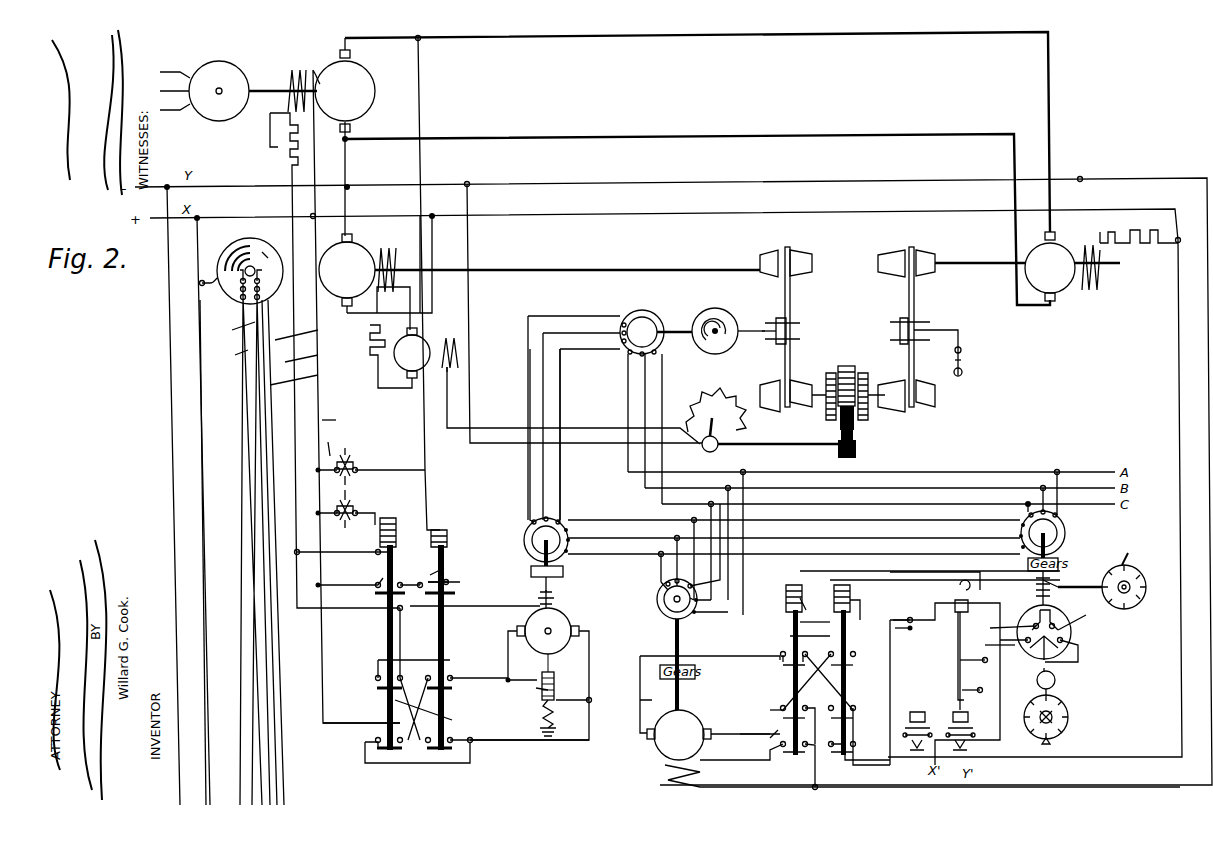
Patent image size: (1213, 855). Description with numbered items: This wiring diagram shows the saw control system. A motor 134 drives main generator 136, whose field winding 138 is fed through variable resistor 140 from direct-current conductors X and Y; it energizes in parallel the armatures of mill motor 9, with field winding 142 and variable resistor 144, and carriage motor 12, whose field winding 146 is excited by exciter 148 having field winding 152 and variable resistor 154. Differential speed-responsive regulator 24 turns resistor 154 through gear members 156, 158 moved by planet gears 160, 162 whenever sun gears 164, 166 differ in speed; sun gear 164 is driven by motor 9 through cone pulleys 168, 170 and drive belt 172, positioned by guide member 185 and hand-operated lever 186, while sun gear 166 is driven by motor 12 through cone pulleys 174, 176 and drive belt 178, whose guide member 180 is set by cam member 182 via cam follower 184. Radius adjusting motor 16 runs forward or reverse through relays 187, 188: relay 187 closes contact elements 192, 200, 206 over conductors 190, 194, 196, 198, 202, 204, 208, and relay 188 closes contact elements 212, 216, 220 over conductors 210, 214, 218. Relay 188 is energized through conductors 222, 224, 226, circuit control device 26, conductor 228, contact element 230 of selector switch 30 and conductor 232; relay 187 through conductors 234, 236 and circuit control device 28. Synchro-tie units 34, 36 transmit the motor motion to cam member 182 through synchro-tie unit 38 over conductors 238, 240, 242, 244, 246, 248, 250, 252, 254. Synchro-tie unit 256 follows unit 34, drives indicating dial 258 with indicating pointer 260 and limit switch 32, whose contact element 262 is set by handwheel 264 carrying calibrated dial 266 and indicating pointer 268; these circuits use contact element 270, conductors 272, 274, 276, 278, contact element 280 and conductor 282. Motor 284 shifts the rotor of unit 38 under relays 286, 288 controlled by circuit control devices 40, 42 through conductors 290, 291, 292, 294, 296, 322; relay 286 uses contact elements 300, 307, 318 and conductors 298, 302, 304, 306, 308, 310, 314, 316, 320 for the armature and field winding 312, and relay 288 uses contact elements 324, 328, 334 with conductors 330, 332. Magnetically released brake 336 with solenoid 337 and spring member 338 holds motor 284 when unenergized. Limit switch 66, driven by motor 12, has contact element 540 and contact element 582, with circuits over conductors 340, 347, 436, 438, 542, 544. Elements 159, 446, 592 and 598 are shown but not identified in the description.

The mill motor 9 is at (1036, 236).
The carriage drive motor 12 is at (356, 248).
The radius adjusting motor 16 is at (694, 724).
The differential speed-responsive regulator 24 is at (852, 305).
The circuit control device 26 is at (918, 712).
The circuit control device 28 is at (958, 712).
The selector switch 30 is at (955, 600).
The limit switch 32 is at (1072, 630).
The synchro-tie unit 34 is at (658, 610).
The synchro-tie unit 36 is at (642, 312).
The synchro-tie unit 38 is at (524, 545).
The circuit control device 40 is at (355, 462).
The circuit control device 42 is at (355, 505).
The limit switch 66 is at (222, 296).
The motor 134 is at (245, 80).
The main generator 136 is at (373, 100).
The field winding 138 is at (296, 66).
The variable resistor 140 is at (262, 156).
The field winding 142 is at (1100, 278).
The variable resistor 144 is at (1143, 230).
The field winding 146 is at (391, 255).
The exciter 148 is at (424, 370).
The field winding 152 is at (448, 345).
The variable resistor 154 is at (700, 402).
The gear member 156 is at (858, 455).
The gear member 158 is at (856, 432).
The resistor 159 is at (370, 350).
The planet gear 160 is at (848, 370).
The planet gear 162 is at (856, 418).
The sun gear 164 is at (870, 378).
The sun gear 166 is at (820, 378).
The cone pulley 168 is at (935, 277).
The cone pulley 170 is at (930, 397).
The drive belt 172 is at (916, 303).
The cone pulley 174 is at (776, 252).
The cone pulley 176 is at (762, 390).
The drive belt 178 is at (792, 350).
The guide member 180 is at (781, 338).
The cam member 182 is at (720, 312).
The cam follower 184 is at (765, 325).
The guide member 185 is at (935, 326).
The hand-operated lever 186 is at (963, 372).
The relay 187 is at (780, 627).
The relay 188 is at (874, 630).
The conductor 190 is at (822, 782).
The contact element 192 is at (766, 738).
The conductor 194 is at (770, 710).
The conductor 196 is at (738, 727).
The conductor 198 is at (752, 660).
The contact element 200 is at (780, 667).
The conductor 202 is at (846, 688).
The conductor 204 is at (740, 777).
The contact element 206 is at (757, 765).
The conductor 208 is at (828, 765).
The conductor 210 is at (800, 686).
The contact element 212 is at (853, 660).
The conductor 214 is at (810, 637).
The contact element 216 is at (855, 710).
The conductor 218 is at (855, 752).
The contact element 220 is at (853, 754).
The conductor 222 is at (815, 627).
The conductor 224 is at (858, 580).
The conductor 226 is at (865, 605).
The conductor 228 is at (940, 648).
The contact element 230 is at (910, 625).
The conductor 232 is at (909, 610).
The conductor 234 is at (815, 598).
The conductor 236 is at (930, 562).
The conductor 238 is at (660, 570).
The conductor 240 is at (668, 588).
The conductor 242 is at (662, 598).
The conductor 244 is at (794, 546).
The conductor 246 is at (794, 530).
The conductor 248 is at (794, 512).
The conductor 250 is at (558, 466).
The conductor 252 is at (545, 488).
The conductor 254 is at (545, 497).
The synchro-tie unit 256 is at (1066, 530).
The indicating dial 258 is at (1134, 576).
The indicating pointer 260 is at (1136, 551).
The contact element 262 is at (1079, 647).
The handwheel 264 is at (1068, 714).
The calibrated dial 266 is at (1062, 698).
The indicating pointer 268 is at (1056, 742).
The contact element 270 is at (935, 577).
The conductor 272 is at (1036, 586).
The conductor 274 is at (1040, 590).
The conductor 276 is at (1082, 615).
The conductor 278 is at (979, 690).
The contact element 280 is at (978, 653).
The conductor 282 is at (1007, 647).
The motor 284 is at (530, 618).
The relay 286 is at (482, 553).
The relay 288 is at (362, 551).
The conductor 290 is at (338, 410).
The conductor 291 is at (334, 442).
The conductor 292 is at (398, 468).
The conductor 294 is at (405, 552).
The conductor 296 is at (316, 354).
The conductor 298 is at (380, 706).
The contact element 300 is at (452, 694).
The conductor 302 is at (455, 678).
The conductor 304 is at (504, 640).
The conductor 306 is at (590, 665).
The contact element 307 is at (458, 740).
The conductor 308 is at (452, 720).
The conductor 310 is at (400, 648).
The field winding 312 is at (500, 601).
The conductor 314 is at (364, 584).
The conductor 316 is at (445, 574).
The contact element 318 is at (440, 591).
The conductor 320 is at (448, 592).
The conductor 322 is at (378, 512).
The contact element 324 is at (375, 593).
The contact element 328 is at (365, 752).
The conductor 330 is at (380, 766).
The conductor 332 is at (450, 660).
The contact element 334 is at (377, 690).
The magnetically released brake 336 is at (590, 679).
The solenoid 337 is at (536, 690).
The spring member 338 is at (553, 712).
The conductor 340 is at (202, 440).
The conductor 347 is at (174, 498).
The conductor 436 is at (232, 548).
The conductor 438 is at (318, 330).
The hub 446 is at (255, 271).
The contact element 540 is at (246, 256).
The conductor 542 is at (197, 283).
The conductor 544 is at (308, 375).
The contact element 582 is at (226, 248).
The conductor 592 is at (229, 327).
The conductor 598 is at (226, 349).